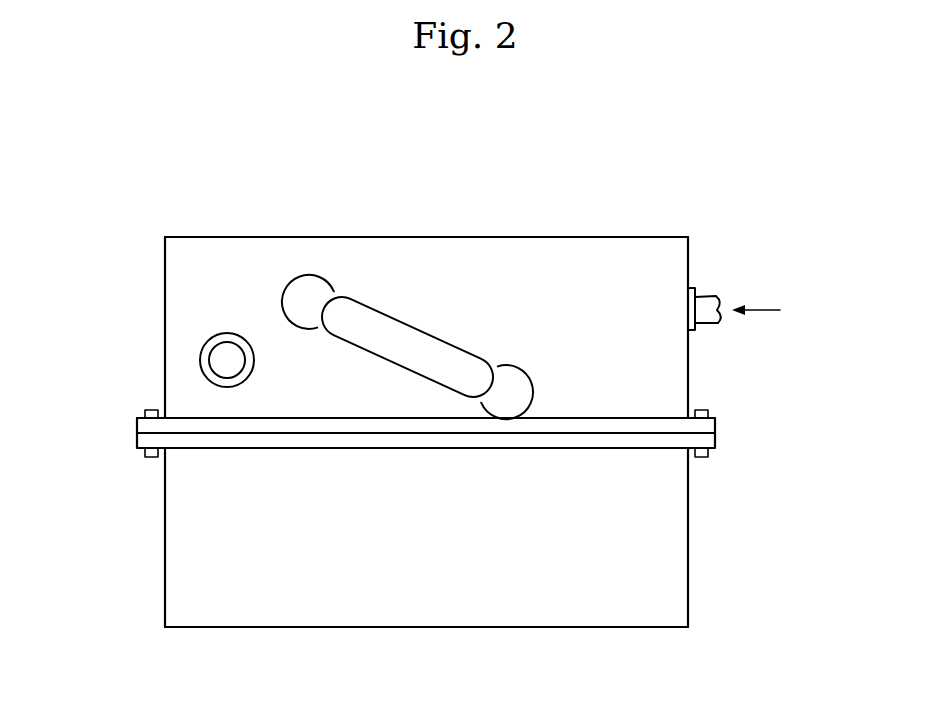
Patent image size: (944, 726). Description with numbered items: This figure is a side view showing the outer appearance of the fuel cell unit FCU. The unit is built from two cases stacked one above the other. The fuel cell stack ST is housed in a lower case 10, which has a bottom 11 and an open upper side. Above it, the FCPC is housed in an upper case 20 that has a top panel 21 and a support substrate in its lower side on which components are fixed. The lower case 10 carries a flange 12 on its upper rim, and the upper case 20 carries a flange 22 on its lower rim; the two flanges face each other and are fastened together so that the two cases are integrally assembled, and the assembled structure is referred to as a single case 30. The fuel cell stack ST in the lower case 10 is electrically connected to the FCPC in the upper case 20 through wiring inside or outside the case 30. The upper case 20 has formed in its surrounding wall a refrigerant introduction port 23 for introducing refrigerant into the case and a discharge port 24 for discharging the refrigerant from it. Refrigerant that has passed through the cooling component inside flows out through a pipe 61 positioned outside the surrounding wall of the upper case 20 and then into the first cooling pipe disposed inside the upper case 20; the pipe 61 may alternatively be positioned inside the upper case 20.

The lower case 10 is at (426, 578).
The bottom 11 is at (233, 627).
The flange 12 is at (407, 432).
The upper case 20 is at (426, 290).
The top panel 21 is at (572, 237).
The flange 22 is at (188, 428).
The introduction port 23 is at (705, 300).
The discharge port 24 is at (215, 362).
The case 30 is at (829, 237).
The pipe 61 is at (403, 348).
The fuel cell unit FCU is at (158, 276).
The element FCPC is at (638, 367).
The fuel cell stack ST is at (638, 510).